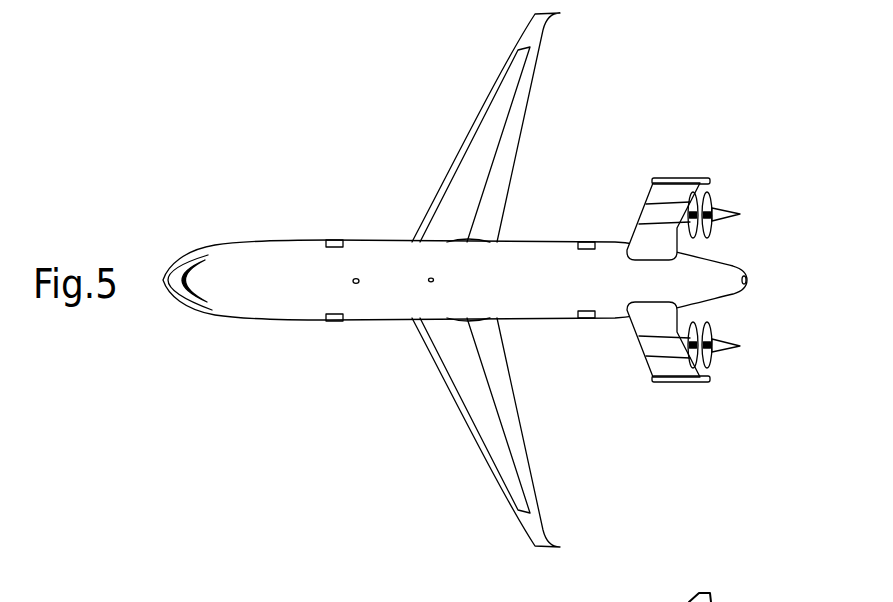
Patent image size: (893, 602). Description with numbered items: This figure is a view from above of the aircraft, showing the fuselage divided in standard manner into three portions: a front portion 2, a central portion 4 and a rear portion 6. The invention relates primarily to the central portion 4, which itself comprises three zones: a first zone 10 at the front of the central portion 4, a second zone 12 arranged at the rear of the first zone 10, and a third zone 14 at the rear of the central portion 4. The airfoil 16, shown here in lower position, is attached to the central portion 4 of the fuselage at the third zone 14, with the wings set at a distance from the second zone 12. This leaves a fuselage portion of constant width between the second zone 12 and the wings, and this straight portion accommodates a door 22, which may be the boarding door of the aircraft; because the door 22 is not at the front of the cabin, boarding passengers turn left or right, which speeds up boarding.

The front portion 2 is at (170, 284).
The central portion 4 is at (497, 305).
The rear portion 6 is at (744, 268).
The first zone 10 is at (222, 242).
The second zone 12 is at (278, 240).
The third zone 14 is at (565, 242).
The airfoil 16 is at (505, 133).
The door 22 is at (332, 323).